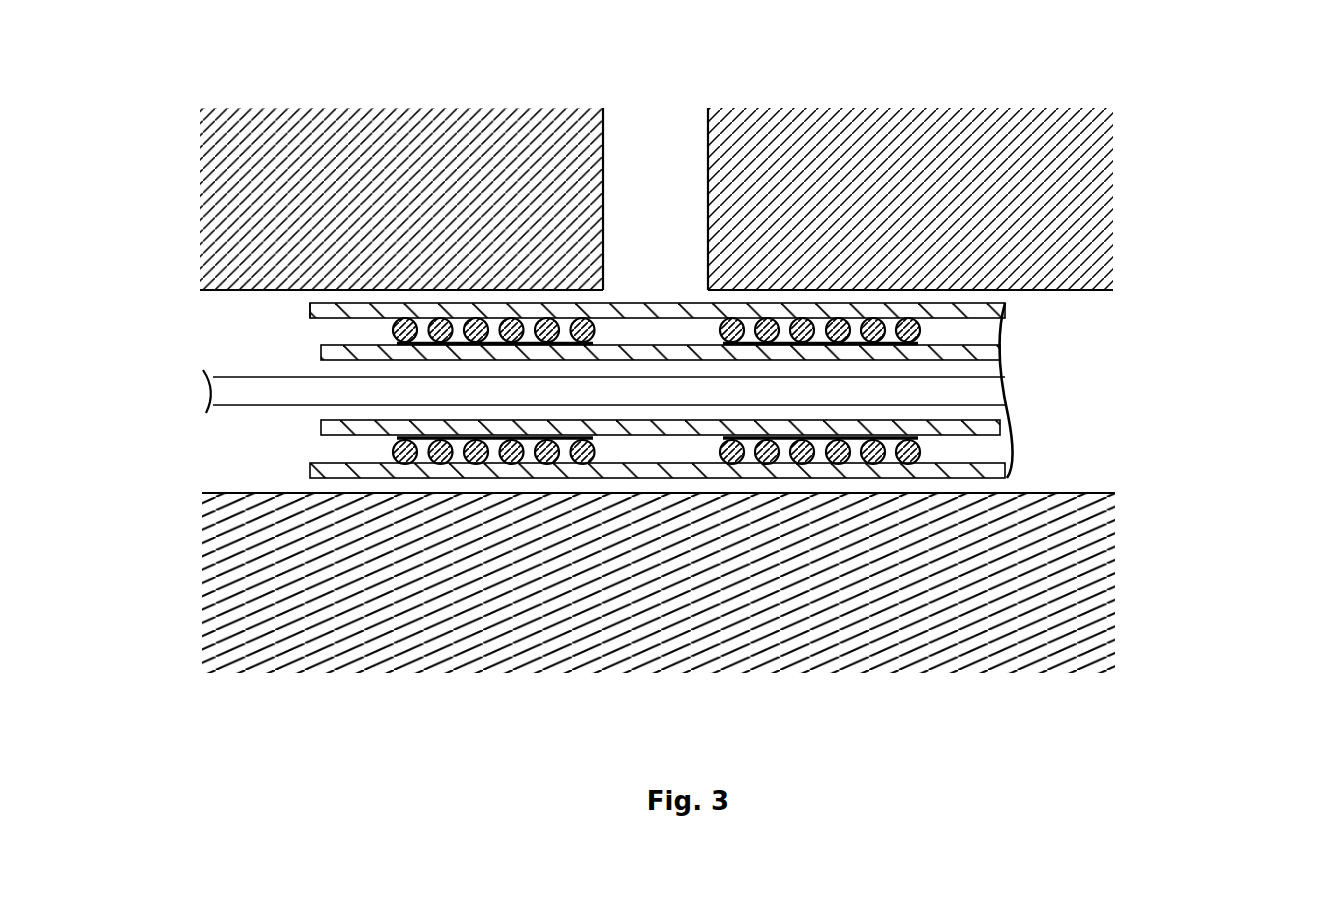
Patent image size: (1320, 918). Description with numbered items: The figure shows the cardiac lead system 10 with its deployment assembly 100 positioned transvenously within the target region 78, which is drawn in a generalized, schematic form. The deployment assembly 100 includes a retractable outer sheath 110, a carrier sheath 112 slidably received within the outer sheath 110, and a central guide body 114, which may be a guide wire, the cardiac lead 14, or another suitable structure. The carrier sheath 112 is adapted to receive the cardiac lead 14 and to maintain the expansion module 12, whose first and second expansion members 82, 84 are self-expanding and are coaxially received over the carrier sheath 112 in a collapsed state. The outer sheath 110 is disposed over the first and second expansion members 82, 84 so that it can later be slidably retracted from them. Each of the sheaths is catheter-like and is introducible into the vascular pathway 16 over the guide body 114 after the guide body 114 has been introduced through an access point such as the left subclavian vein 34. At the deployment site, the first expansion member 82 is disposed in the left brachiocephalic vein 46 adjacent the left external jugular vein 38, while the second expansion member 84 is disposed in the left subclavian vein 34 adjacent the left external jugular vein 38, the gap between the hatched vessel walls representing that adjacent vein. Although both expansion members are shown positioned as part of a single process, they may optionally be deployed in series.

The cardiac lead system 10 is at (185, 328).
The expansion module 12 is at (493, 490).
The cardiac lead 14 is at (604, 391).
The vascular pathway 16 is at (960, 493).
The left subclavian vein 34 is at (978, 289).
The left external jugular vein 38 is at (655, 140).
The left brachiocephalic vein 46 is at (338, 493).
The target region 78 is at (1043, 135).
The first expansion member 82 is at (442, 318).
The second expansion member 84 is at (800, 318).
The deployment assembly 100 is at (1034, 373).
The outer sheath 110 is at (997, 483).
The carrier sheath 112 is at (1003, 333).
The guide body 114 is at (973, 395).